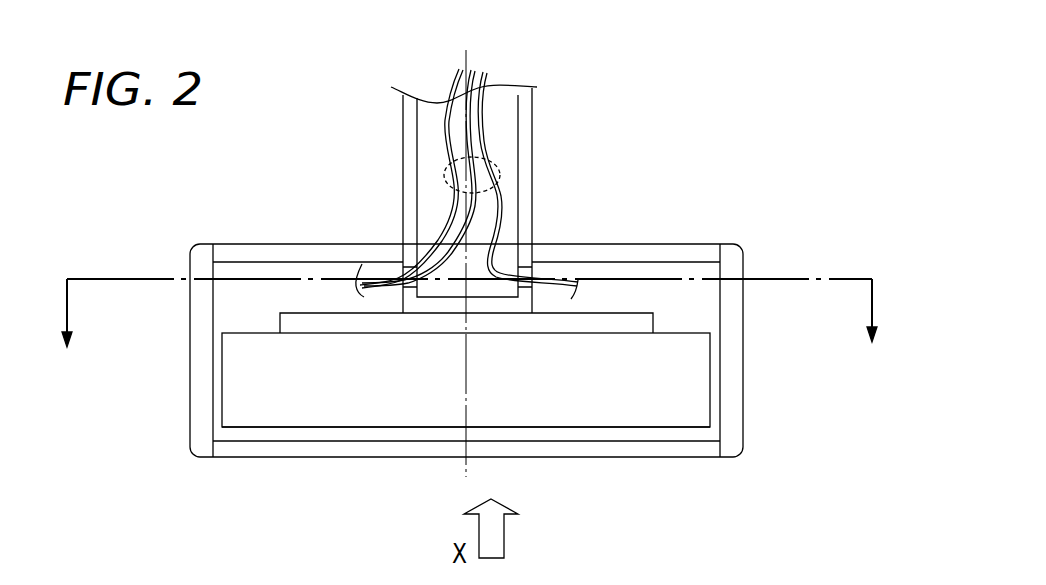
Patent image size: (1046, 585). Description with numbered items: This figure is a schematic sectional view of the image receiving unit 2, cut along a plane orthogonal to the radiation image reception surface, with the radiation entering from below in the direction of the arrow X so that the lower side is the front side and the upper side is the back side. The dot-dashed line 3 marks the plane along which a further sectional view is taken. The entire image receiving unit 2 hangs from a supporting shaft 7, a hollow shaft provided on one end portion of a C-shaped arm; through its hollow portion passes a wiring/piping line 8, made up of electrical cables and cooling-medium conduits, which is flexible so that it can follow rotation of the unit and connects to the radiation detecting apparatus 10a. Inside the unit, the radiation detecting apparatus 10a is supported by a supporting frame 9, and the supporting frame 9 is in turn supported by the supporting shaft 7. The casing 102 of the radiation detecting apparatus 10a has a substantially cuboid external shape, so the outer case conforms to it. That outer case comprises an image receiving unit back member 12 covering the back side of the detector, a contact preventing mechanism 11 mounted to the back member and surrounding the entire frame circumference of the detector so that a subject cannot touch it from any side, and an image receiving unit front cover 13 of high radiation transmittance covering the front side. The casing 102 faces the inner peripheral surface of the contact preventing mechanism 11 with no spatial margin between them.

The image receiving unit 2 is at (700, 227).
The dot-dashed line 3 is at (469, 331).
The supporting shaft 7 is at (523, 162).
The wiring/piping line 8 is at (450, 173).
The supporting frame 9 is at (327, 317).
The radiation detecting apparatus 10a is at (345, 403).
The contact preventing mechanism 11 is at (202, 375).
The image receiving unit back member 12 is at (260, 256).
The image receiving unit front cover 13 is at (242, 452).
The casing 102 is at (627, 428).